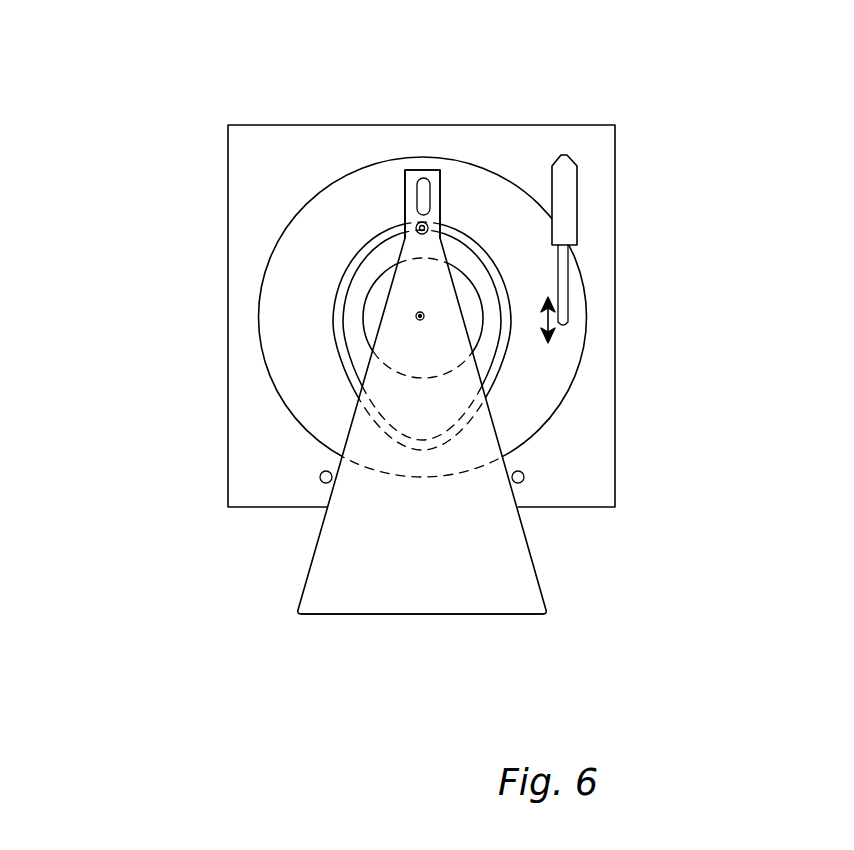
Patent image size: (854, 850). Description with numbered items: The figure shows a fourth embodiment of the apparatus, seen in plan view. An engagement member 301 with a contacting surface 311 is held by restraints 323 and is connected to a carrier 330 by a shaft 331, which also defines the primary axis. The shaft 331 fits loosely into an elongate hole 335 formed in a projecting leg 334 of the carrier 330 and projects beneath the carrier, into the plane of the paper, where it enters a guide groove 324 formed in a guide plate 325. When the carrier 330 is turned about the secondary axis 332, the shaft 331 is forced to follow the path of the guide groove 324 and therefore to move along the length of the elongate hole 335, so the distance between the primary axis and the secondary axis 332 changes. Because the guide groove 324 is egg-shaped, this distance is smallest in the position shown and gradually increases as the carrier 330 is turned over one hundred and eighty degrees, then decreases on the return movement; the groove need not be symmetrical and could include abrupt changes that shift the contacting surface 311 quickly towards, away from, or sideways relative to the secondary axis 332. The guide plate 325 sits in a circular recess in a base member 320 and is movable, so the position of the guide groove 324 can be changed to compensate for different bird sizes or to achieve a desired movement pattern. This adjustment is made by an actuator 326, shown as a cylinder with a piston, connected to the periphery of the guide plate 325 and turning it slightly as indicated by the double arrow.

The engagement member 301 is at (372, 616).
The contacting surface 311 is at (500, 616).
The base member 320 is at (229, 472).
The restraints 323 is at (323, 483).
The guide groove 324 is at (503, 355).
The guide plate 325 is at (567, 345).
The actuator 326 is at (563, 282).
The carrier 330 is at (380, 290).
The shaft 331 is at (412, 228).
The secondary axis 332 is at (416, 316).
The projecting leg 334 is at (402, 170).
The elongate hole 335 is at (410, 226).